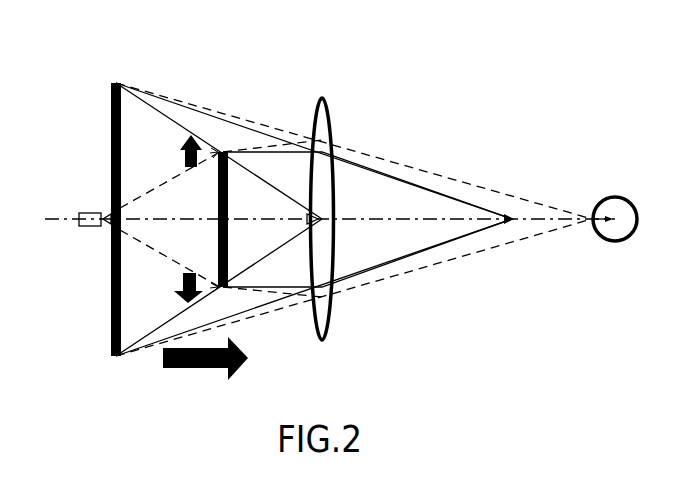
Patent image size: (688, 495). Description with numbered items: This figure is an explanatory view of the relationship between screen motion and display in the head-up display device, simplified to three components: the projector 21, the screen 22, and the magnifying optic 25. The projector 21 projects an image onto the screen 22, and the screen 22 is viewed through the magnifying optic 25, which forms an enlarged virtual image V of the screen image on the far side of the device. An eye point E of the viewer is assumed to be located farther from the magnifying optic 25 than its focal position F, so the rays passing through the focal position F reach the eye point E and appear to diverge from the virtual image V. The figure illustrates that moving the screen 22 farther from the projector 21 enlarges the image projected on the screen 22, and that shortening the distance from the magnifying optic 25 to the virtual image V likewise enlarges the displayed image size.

The virtual image V is at (110, 130).
The projector 21 is at (92, 230).
The screen 22 is at (228, 183).
The magnifying optic 25 is at (332, 317).
The focal position F is at (511, 215).
The eye point E is at (613, 197).